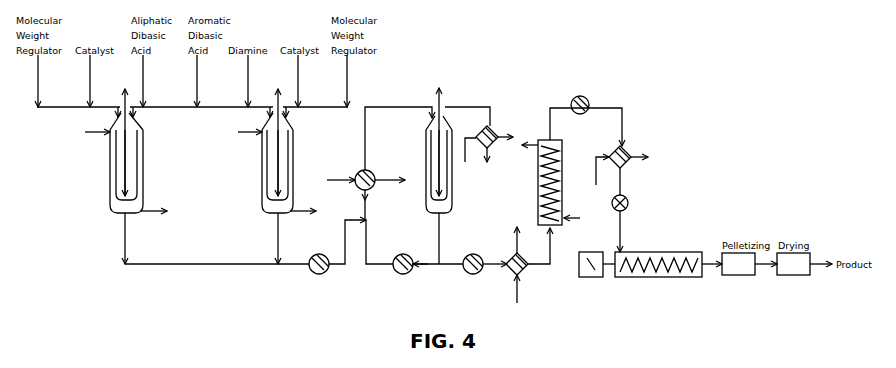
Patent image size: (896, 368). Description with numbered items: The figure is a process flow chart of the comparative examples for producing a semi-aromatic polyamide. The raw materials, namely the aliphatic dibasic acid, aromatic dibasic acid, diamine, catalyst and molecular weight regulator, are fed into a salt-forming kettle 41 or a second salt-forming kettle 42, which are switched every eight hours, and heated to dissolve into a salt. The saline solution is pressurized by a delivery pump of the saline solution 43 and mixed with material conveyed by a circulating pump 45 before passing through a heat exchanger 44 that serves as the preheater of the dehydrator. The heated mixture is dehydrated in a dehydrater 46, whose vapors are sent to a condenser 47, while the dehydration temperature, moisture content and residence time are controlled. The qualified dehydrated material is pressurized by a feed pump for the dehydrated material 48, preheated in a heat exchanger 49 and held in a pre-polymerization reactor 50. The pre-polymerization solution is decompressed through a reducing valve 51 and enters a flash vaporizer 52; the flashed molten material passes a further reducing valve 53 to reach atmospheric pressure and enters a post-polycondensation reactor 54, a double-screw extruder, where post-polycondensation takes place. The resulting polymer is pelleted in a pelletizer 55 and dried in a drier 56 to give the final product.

The salt-forming kettle 41 is at (126, 176).
The salt-forming kettle 42 is at (276, 176).
The delivery pump of the saline solution 43 is at (319, 278).
The heat exchanger 44 is at (379, 163).
The circulating pump 45 is at (410, 278).
The dehydrater 46 is at (444, 176).
The condenser 47 is at (490, 135).
The feed pump for the dehydrated material 48 is at (473, 278).
The heat exchanger 49 is at (528, 265).
The pre-polymerization reactor 50 is at (567, 166).
The reducing valve 51 is at (581, 94).
The flash vaporizer 52 is at (625, 164).
The reducing valve 53 is at (636, 223).
The post-polycondensation reactor (double-screw extruder) 54 is at (650, 277).
The pelletizer 55 is at (749, 277).
The drier 56 is at (804, 277).